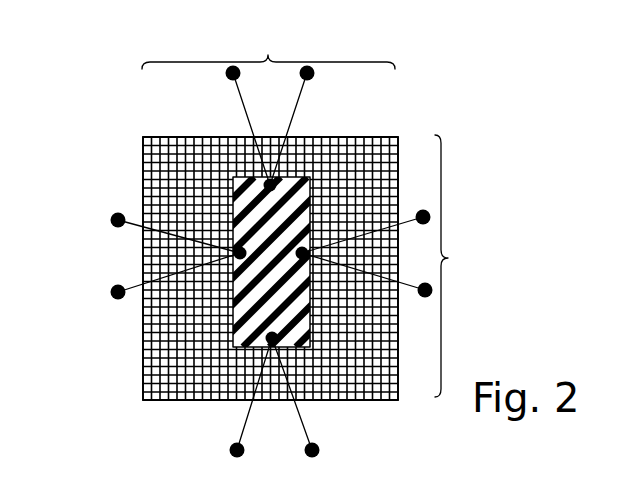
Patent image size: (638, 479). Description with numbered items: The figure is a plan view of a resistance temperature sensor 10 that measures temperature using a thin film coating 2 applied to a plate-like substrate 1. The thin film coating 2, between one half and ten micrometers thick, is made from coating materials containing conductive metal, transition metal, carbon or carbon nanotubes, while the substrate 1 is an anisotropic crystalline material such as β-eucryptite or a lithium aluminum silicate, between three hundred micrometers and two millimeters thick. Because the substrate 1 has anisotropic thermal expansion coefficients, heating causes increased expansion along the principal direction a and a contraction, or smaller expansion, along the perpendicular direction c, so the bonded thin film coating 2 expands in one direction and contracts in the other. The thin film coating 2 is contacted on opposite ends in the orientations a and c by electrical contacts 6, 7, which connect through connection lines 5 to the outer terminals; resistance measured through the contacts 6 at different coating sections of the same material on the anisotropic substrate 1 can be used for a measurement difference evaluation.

The substrate 1 is at (153, 172).
The thin film coating 2 is at (265, 345).
The connection lines 5 is at (132, 226).
The electrical contacts 6 is at (240, 253).
The electrical contacts 7 is at (280, 186).
The resistance temperature sensor 10 is at (483, 270).